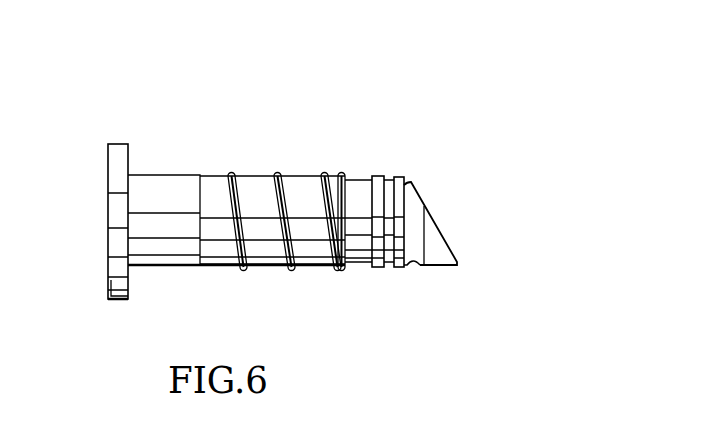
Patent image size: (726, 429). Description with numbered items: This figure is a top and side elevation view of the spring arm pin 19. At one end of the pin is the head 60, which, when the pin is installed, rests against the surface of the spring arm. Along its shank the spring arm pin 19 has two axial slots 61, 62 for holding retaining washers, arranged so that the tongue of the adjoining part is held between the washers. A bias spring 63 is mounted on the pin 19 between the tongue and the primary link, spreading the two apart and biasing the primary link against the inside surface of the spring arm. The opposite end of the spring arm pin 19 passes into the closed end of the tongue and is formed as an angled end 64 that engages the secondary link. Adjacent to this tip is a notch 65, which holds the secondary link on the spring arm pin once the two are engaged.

The head 60 is at (116, 144).
The spring arm pin 19 is at (260, 175).
The axial slot 61 is at (363, 176).
The axial slot 62 is at (400, 177).
The bias spring 63 is at (292, 268).
The angled end 64 is at (443, 235).
The notch 65 is at (413, 268).